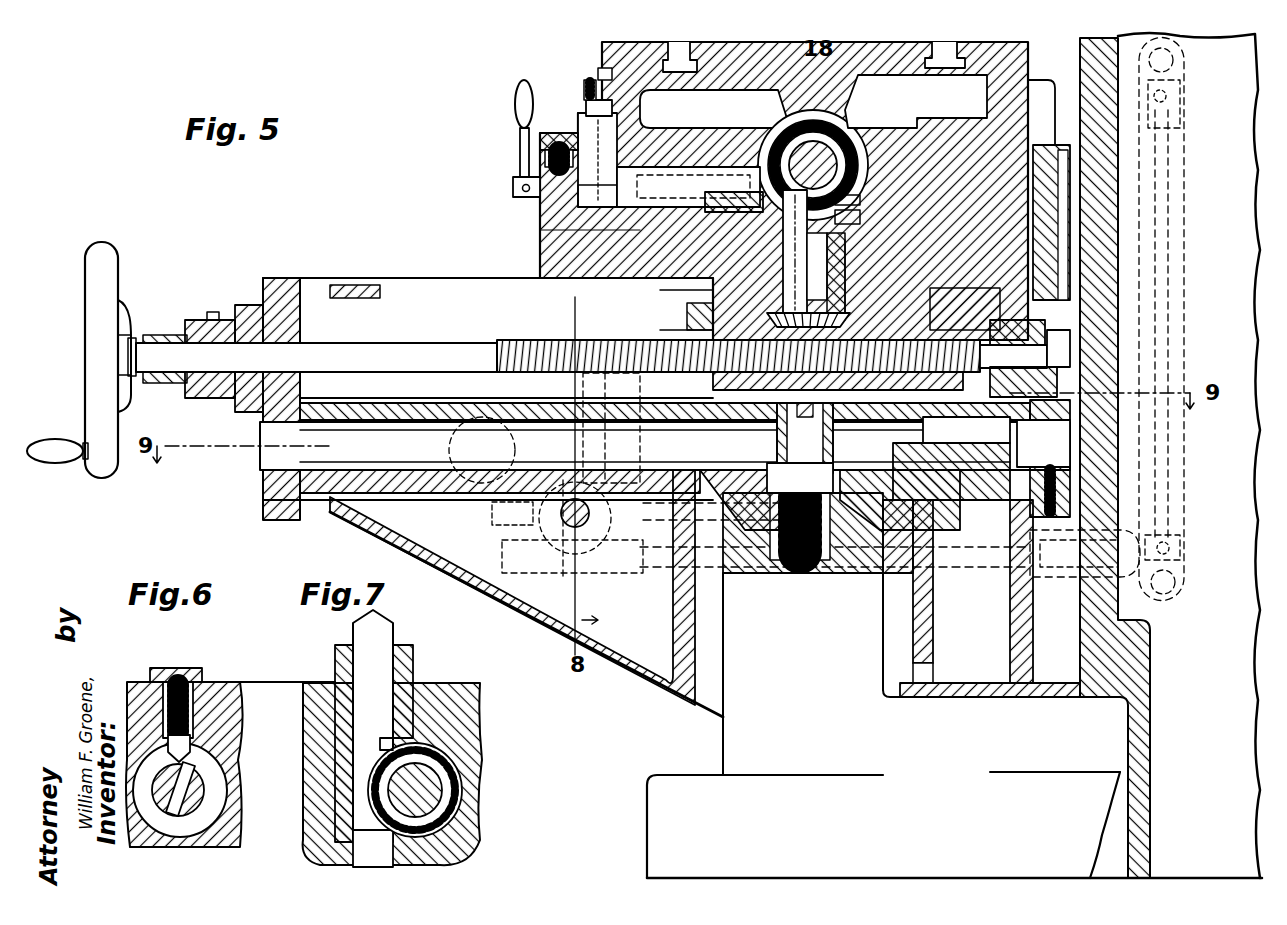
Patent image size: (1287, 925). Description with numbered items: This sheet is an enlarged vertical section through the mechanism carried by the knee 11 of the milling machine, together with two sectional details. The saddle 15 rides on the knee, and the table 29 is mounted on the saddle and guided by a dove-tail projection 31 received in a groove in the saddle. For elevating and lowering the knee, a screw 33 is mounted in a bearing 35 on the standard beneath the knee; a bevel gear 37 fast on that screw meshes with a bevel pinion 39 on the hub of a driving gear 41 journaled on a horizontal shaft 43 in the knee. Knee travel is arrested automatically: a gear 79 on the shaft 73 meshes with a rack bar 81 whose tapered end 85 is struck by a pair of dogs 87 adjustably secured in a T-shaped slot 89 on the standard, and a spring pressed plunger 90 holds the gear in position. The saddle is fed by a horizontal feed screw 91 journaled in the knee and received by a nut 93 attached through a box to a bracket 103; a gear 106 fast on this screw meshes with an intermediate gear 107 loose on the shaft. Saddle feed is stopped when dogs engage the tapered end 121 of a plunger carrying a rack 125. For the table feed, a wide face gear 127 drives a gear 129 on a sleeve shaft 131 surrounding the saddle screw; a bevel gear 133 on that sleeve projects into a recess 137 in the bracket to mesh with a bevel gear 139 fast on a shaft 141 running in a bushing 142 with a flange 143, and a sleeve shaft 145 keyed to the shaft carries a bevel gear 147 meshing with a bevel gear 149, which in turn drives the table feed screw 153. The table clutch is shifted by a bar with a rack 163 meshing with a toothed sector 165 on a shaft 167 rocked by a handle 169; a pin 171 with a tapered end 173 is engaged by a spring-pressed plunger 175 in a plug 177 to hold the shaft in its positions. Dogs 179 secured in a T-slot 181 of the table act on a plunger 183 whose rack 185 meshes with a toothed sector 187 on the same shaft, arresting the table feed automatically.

In FIG. 5, the knee 11 is at (535, 620).
In FIG. 5, the saddle 15 is at (540, 262).
In FIG. 5, the table 29 is at (600, 52).
In FIG. 5, the dove-tail projection 31 is at (586, 108).
In FIG. 5, the screw 33 is at (755, 570).
In FIG. 5, the bearing 35 is at (735, 742).
In FIG. 5, the bevel gear 37 is at (870, 430).
In FIG. 5, the bevel pinion 39 is at (871, 438).
In FIG. 5, the driving gear 41 is at (960, 465).
In FIG. 5, the horizontal shaft 43 is at (1075, 445).
In FIG. 5, the shaft 73 is at (560, 522).
In FIG. 5, the gear 79 is at (558, 543).
In FIG. 5, the rack bar 81 is at (590, 480).
In FIG. 5, the tapered end 85 is at (1140, 552).
In FIG. 5, the dogs 87 is at (1170, 98).
In FIG. 5, the T-shaped slot 89 is at (1168, 211).
In FIG. 5, the spring pressed plunger 90 is at (492, 520).
In FIG. 5, the horizontal feed screw 91 is at (543, 280).
In FIG. 5, the nut 93 is at (952, 328).
In FIG. 5, the bracket 103 is at (668, 296).
In FIG. 5, the gear 106 is at (1060, 385).
In FIG. 5, the intermediate gear 107 is at (1050, 398).
In FIG. 5, the tapered end 121 is at (583, 380).
In FIG. 5, the rack 125 is at (641, 554).
In FIG. 5, the wide face gear 127 is at (360, 410).
In FIG. 5, the gear 129 is at (687, 312).
In FIG. 5, the sleeve shaft 131 is at (687, 326).
In FIG. 5, the bevel gear 133 is at (845, 300).
In FIG. 5, the recess 137 is at (855, 320).
In FIG. 5, the bevel gear 139 is at (786, 315).
In FIG. 5, the shaft 141 is at (783, 240).
In FIG. 5, the bushing 142 is at (808, 262).
In FIG. 5, the flange 143 is at (760, 212).
In FIG. 5, the sleeve shaft 145 is at (860, 220).
In FIG. 5, the bevel gear 147 is at (860, 200).
In FIG. 5, the bevel gear 149 is at (845, 118).
In FIG. 5, the feed screw 153 is at (790, 135).
In FIG. 5, the rack 163 is at (725, 215).
In FIG. 5, the toothed sector 165 is at (705, 207).
In FIG. 5, the shaft 167 is at (585, 205).
In FIG. 6, the shaft 167 is at (205, 805).
In FIG. 5, the handle 169 is at (515, 100).
In FIG. 5, the pin 171 is at (522, 191).
In FIG. 6, the pin 171 is at (190, 788).
In FIG. 5, the tapered end 173 is at (513, 186).
In FIG. 6, the tapered end 173 is at (190, 757).
In FIG. 5, the spring-pressed plunger 175 is at (545, 159).
In FIG. 6, the spring-pressed plunger 175 is at (190, 740).
In FIG. 5, the plug 177 is at (540, 141).
In FIG. 6, the plug 177 is at (205, 675).
In FIG. 5, the dogs 179 is at (584, 90).
In FIG. 5, the T-slot 181 is at (598, 74).
In FIG. 5, the plunger 183 is at (578, 128).
In FIG. 7, the plunger 183 is at (385, 666).
In FIG. 7, the rack 185 is at (385, 745).
In FIG. 5, the toothed sector 187 is at (545, 230).
In FIG. 7, the toothed sector 187 is at (445, 790).